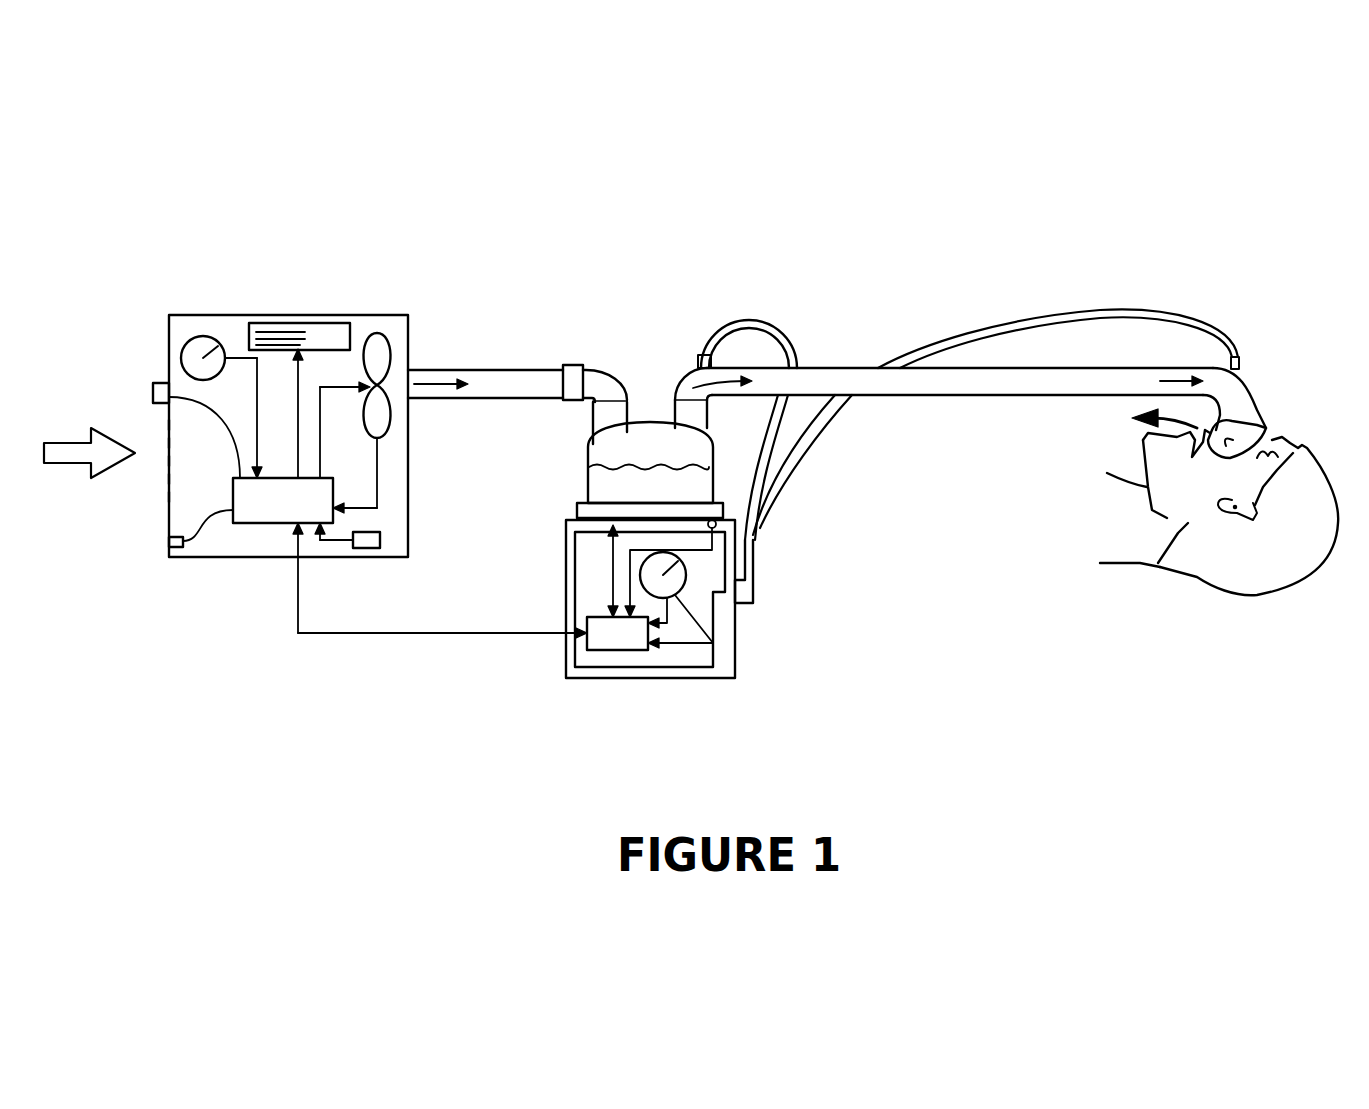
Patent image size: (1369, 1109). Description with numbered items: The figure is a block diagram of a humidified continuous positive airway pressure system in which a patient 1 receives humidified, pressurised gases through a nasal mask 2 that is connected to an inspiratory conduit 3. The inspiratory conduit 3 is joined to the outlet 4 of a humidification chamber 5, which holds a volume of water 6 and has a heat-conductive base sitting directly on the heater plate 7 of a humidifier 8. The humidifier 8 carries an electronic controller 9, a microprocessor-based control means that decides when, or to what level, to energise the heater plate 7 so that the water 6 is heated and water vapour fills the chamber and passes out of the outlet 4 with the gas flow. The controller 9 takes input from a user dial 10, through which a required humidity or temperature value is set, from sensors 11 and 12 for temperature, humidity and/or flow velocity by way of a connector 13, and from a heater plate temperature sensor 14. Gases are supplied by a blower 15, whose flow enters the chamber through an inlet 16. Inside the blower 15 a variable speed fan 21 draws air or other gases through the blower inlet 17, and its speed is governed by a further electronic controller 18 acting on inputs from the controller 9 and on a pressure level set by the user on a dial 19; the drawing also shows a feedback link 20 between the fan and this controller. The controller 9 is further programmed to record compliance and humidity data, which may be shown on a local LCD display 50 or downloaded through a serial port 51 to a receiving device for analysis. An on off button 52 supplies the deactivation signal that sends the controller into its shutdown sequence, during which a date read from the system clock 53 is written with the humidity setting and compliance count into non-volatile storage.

The patient 1 is at (1197, 585).
The nasal mask 2 is at (1267, 428).
The inspiratory conduit 3 is at (983, 397).
The outlet 4 is at (676, 398).
The humidification chamber 5 is at (588, 455).
The water 6 is at (649, 483).
The heater plate 7 is at (577, 509).
The humidifier 8 is at (566, 586).
The electronic controller 9 is at (617, 633).
The dial 10 is at (713, 643).
The sensor 11 is at (1241, 363).
The sensor 12 is at (701, 355).
The connector 13 is at (755, 601).
The heater plate temperature sensor 14 is at (717, 525).
The blower 15 is at (287, 315).
The inlet 16 is at (594, 416).
The blower inlet 17 is at (165, 497).
The electronic controller 18 is at (250, 524).
The dial 19 is at (205, 336).
The fan speed feedback 20 is at (377, 493).
The variable speed fan 21 is at (377, 333).
The LCD display 50 is at (345, 323).
The serial port 51 is at (169, 547).
The on off button 52 is at (153, 388).
The system clock 53 is at (375, 548).